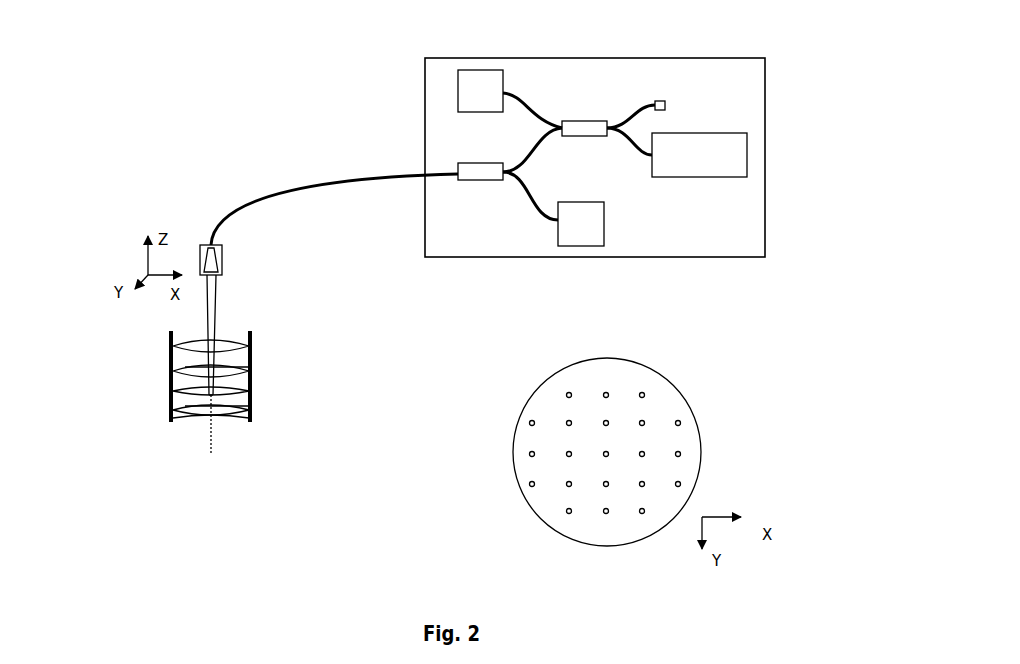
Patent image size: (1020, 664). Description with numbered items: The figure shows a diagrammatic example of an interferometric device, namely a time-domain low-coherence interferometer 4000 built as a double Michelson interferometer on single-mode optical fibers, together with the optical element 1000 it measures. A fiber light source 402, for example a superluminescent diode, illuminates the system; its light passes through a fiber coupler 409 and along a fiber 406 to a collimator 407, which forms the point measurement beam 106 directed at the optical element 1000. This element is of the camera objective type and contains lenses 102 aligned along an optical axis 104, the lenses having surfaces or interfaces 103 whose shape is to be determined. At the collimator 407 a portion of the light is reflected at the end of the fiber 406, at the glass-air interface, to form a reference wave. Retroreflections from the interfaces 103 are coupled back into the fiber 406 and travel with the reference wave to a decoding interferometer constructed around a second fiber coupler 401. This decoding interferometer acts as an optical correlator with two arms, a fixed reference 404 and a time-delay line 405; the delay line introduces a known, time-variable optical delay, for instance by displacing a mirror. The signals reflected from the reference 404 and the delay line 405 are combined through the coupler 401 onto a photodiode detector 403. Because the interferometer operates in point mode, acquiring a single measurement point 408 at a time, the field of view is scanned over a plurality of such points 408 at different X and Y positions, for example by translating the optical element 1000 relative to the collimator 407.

The interferometer 4000 is at (772, 159).
The detector 403 is at (480, 70).
The fiber coupler 401 is at (583, 121).
The fixed reference 404 is at (658, 101).
The time-delay line 405 is at (700, 133).
The fiber coupler 409 is at (481, 180).
The light source 402 is at (578, 246).
The fiber 406 is at (333, 182).
The collimator 407 is at (222, 262).
The point measurement beam 106 is at (215, 310).
The optical element 1000 is at (213, 402).
The surfaces or interfaces 103 is at (170, 402).
The lenses 102 is at (253, 412).
The optical axis 104 is at (212, 452).
The measurement point 408 is at (645, 395).